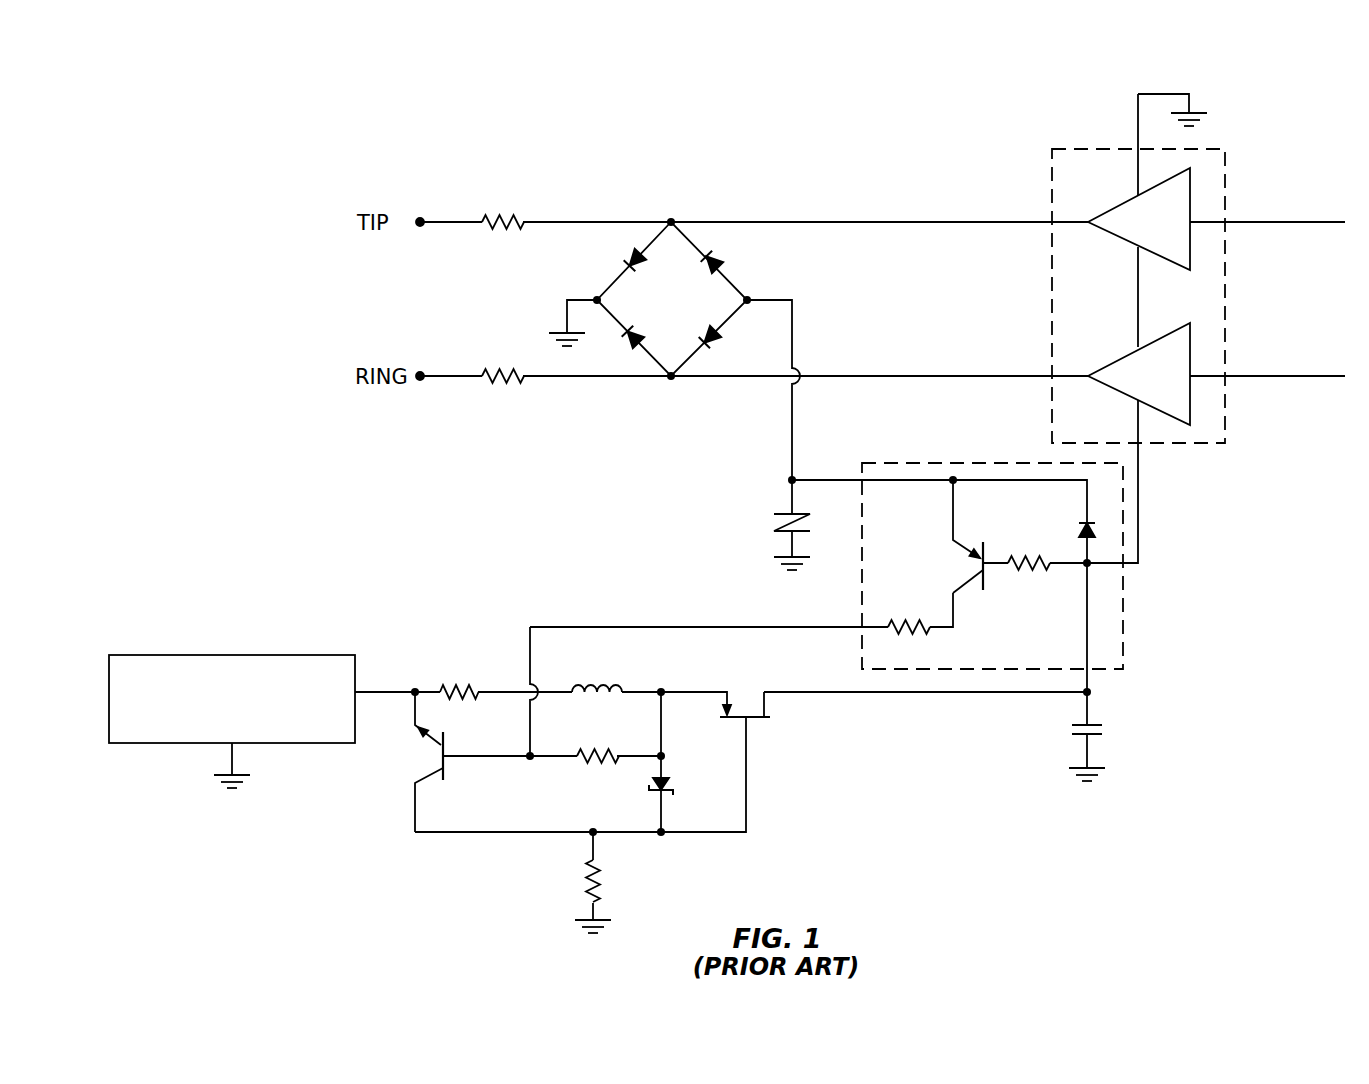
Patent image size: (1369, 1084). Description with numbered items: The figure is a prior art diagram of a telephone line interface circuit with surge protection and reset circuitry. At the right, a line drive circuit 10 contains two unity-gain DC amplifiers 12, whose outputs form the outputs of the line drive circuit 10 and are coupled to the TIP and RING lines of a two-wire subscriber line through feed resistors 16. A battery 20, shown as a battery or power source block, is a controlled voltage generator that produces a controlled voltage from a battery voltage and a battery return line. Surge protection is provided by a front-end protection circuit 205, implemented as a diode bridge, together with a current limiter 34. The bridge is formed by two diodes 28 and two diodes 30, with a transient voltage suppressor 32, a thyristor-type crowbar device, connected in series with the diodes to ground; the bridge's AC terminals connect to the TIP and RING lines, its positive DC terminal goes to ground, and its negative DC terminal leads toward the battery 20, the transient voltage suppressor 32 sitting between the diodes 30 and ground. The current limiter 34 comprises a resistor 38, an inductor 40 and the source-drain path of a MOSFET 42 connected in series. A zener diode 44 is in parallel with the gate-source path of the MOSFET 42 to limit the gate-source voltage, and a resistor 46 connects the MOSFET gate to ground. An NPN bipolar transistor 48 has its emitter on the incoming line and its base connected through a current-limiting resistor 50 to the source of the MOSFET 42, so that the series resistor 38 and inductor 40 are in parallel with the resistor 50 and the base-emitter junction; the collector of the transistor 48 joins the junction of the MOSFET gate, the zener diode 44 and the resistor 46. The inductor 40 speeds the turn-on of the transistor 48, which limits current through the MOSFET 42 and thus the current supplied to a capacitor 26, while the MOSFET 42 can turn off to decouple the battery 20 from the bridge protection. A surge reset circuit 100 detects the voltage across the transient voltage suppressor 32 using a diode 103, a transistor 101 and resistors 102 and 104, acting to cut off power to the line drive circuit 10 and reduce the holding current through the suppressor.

The line drive circuit 10 is at (1225, 168).
The unity-gain DC amplifier 12 is at (1144, 234).
The feed resistor 16 is at (504, 236).
The battery 20 is at (305, 655).
The capacitor 26 is at (1095, 740).
The diode 28 is at (630, 255).
The diode 30 is at (722, 255).
The transient voltage suppressor 32 is at (772, 526).
The current limiter 34 is at (465, 864).
The resistor 38 is at (463, 683).
The inductor 40 is at (603, 683).
The MOSFET 42 is at (720, 706).
The zener diode 44 is at (675, 790).
The resistor 46 is at (603, 885).
The NPN bipolar transistor 48 is at (436, 775).
The current-limiting resistor 50 is at (603, 745).
The surge reset circuit 100 is at (1123, 628).
The transistor 101 is at (985, 582).
The resistor 102 is at (1045, 555).
The diode 103 is at (1080, 528).
The resistor 104 is at (910, 635).
The front-end protection circuit 205 is at (628, 205).